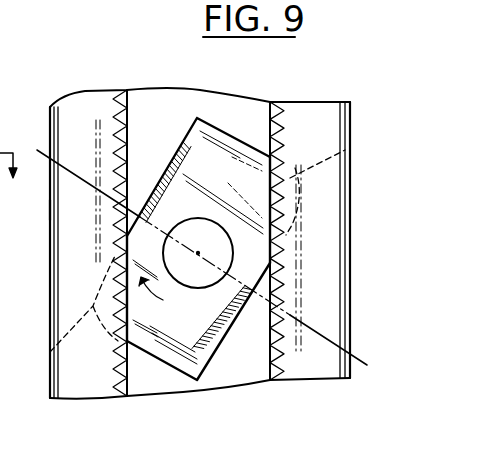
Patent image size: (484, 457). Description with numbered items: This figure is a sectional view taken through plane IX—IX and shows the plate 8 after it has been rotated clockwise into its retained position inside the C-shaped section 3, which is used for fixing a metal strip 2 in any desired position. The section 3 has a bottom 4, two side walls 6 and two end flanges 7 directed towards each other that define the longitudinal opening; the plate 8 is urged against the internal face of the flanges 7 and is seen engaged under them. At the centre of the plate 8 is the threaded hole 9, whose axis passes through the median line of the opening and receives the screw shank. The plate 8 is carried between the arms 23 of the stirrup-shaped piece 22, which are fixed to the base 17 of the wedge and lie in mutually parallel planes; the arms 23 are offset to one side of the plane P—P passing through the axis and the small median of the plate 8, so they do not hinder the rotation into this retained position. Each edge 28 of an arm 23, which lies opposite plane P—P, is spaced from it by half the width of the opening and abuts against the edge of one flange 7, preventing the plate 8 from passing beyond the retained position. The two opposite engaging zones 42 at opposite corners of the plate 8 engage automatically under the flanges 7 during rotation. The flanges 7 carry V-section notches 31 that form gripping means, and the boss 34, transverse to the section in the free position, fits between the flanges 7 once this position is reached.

The metal strip 2 is at (3, 225).
The C-shaped section 3 is at (47, 208).
The bottom 4 is at (155, 115).
The side walls 6 is at (3, 313).
The end flanges 7 is at (70, 268).
The plate 8 is at (233, 145).
The threaded hole 9 is at (233, 250).
The base 17 is at (0, 136).
The stirrup-shaped piece 22 is at (198, 258).
The arms 23 is at (180, 178).
The edge 28 is at (183, 137).
The notch 31 is at (113, 124).
The boss 34 is at (0, 76).
The engaging zones 42 is at (55, 350).
The plane P— P is at (204, 270).
The section plane IX— IX is at (10, 176).